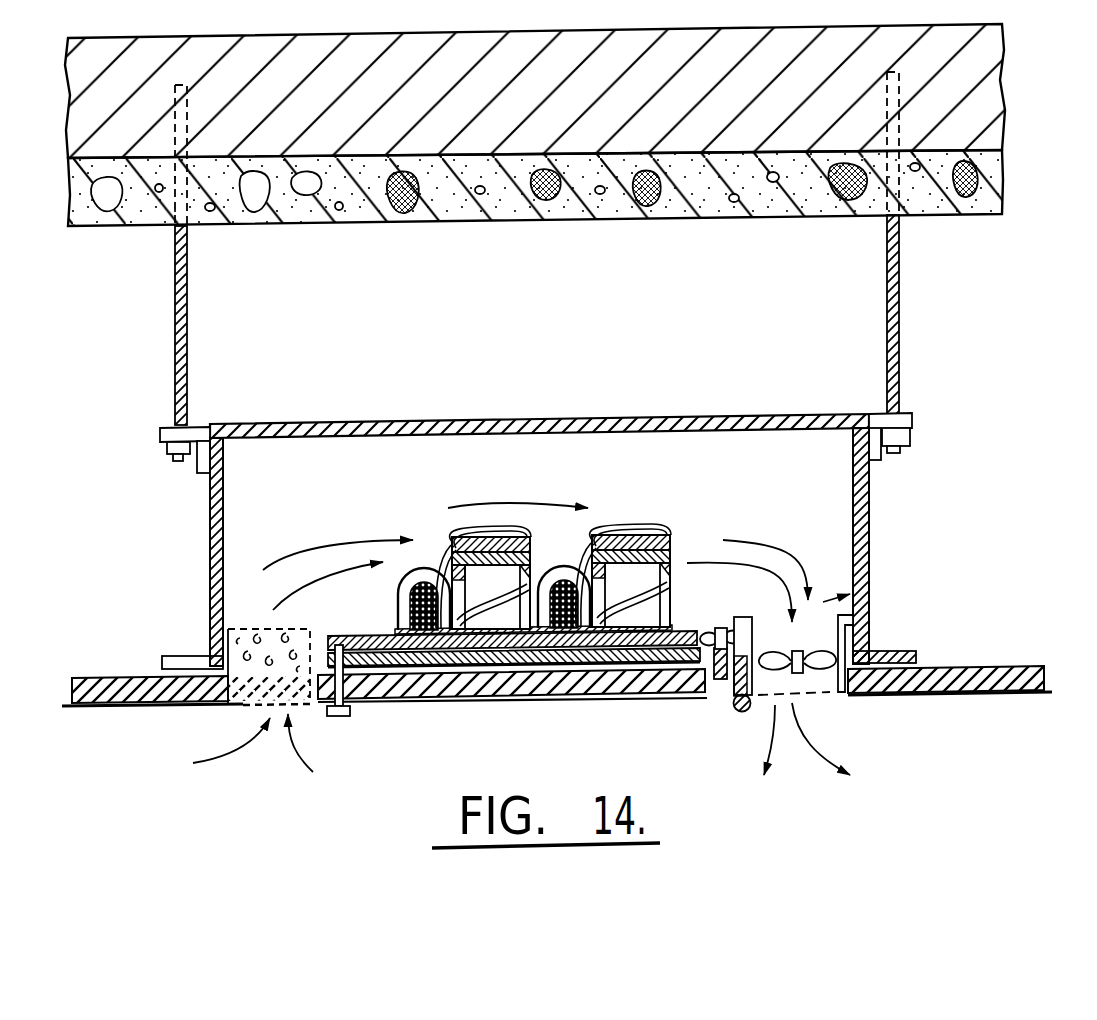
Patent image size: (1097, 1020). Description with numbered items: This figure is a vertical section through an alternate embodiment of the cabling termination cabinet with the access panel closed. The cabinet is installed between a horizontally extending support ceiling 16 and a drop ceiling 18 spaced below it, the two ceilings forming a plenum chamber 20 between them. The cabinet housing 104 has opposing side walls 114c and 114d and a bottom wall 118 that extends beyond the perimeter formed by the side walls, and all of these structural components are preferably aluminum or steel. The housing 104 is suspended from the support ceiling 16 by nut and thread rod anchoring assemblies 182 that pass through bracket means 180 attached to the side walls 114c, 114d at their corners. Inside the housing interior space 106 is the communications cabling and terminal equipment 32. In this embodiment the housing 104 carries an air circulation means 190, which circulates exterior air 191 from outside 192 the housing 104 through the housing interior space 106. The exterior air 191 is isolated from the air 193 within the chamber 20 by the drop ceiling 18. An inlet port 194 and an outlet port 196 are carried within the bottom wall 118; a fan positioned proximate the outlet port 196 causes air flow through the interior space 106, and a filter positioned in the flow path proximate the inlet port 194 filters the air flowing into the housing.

The support ceiling 16 is at (993, 181).
The drop ceiling 18 is at (70, 697).
The plenum area or chamber 20 is at (586, 341).
The communications cabling and terminal equipment 32 is at (690, 513).
The housing 104 is at (698, 416).
The housing interior space 106 is at (454, 489).
The side wall 114c is at (210, 514).
The side wall 114d is at (870, 527).
The bottom wall 118 is at (880, 697).
The bracket means 180 is at (880, 456).
The nut and thread rod anchoring assemblies 182 is at (900, 371).
The air circulation means 190 is at (870, 590).
The exterior air 191 is at (290, 750).
The outside 192 is at (570, 753).
The air within the chamber 193 is at (269, 381).
The inlet port 194 is at (243, 706).
The outlet port 196 is at (828, 693).